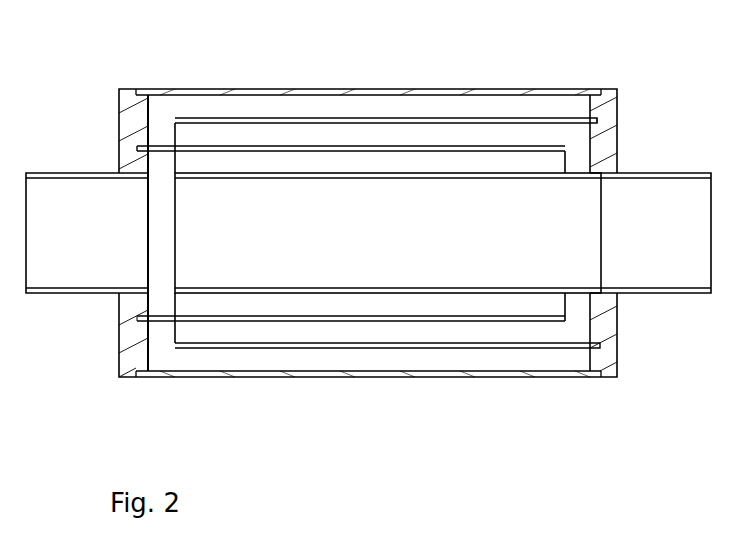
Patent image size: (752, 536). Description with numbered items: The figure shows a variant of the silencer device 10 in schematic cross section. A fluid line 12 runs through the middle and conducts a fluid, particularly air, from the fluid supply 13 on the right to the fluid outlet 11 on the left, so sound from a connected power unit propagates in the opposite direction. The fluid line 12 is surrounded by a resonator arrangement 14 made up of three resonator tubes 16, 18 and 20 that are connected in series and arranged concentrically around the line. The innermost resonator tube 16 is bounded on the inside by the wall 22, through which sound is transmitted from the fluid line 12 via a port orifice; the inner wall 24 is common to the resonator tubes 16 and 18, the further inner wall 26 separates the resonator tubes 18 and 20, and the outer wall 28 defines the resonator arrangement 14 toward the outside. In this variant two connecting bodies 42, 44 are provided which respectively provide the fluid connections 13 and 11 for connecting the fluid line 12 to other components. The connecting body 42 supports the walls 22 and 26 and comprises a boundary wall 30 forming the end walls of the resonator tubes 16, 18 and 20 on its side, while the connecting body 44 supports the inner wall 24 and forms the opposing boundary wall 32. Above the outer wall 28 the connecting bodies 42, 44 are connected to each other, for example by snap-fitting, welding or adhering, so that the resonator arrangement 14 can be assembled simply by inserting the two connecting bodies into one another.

The silencer device 10 is at (271, 396).
The fluid outlet 11 is at (87, 233).
The fluid line 12 is at (388, 233).
The fluid supply 13 is at (650, 233).
The resonator arrangement 14 is at (429, 368).
The resonator tube 16 is at (351, 306).
The resonator tube 18 is at (387, 334).
The resonator tube 20 is at (375, 363).
The wall 22 is at (469, 179).
The inner wall 24 is at (154, 146).
The inner wall 26 is at (199, 120).
The outer wall 28 is at (365, 87).
The boundary wall 30 is at (587, 90).
The boundary wall 32 is at (141, 348).
The connecting body 42 is at (609, 130).
The connecting body 44 is at (122, 309).